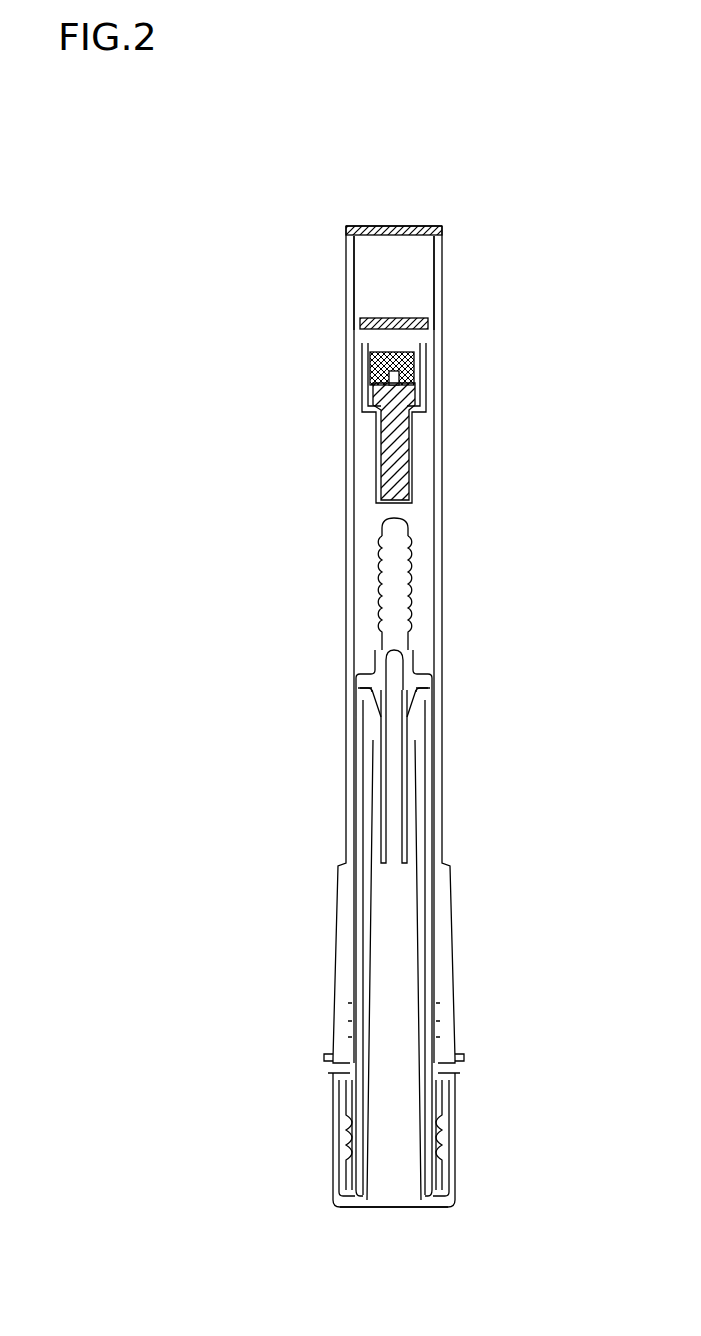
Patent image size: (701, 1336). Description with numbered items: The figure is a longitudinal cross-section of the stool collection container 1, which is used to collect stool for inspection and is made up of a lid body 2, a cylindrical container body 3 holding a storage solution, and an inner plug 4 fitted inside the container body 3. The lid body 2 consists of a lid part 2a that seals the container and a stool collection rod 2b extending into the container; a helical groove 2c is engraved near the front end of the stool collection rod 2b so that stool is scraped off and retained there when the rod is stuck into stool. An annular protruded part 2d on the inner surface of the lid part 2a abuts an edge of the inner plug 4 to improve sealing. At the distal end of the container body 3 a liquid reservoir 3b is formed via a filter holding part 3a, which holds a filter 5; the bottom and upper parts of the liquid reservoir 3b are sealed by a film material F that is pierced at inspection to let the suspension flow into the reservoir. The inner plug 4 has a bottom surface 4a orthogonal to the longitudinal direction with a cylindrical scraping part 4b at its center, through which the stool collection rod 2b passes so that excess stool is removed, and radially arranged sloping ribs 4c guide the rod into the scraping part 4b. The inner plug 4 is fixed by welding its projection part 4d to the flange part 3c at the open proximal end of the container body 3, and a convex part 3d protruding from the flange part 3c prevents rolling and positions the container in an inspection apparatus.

The stool collection container 1 is at (486, 176).
The lid body 2 is at (456, 1120).
The lid part 2a is at (450, 1201).
The stool collection rod 2b is at (400, 632).
The helical groove 2c is at (410, 536).
The protruded part 2d is at (352, 1192).
The container body 3 is at (448, 890).
The filter holding part 3a is at (412, 425).
The liquid reservoir 3b is at (392, 258).
The flange part 3c is at (330, 1057).
The convex part 3d is at (468, 1058).
The inner plug 4 is at (440, 775).
The bottom surface 4a is at (428, 680).
The scraping part 4b is at (378, 673).
The sloping ribs 4c is at (366, 697).
The projection part 4d is at (332, 1071).
The filter 5 is at (380, 397).
The film material F is at (443, 228).